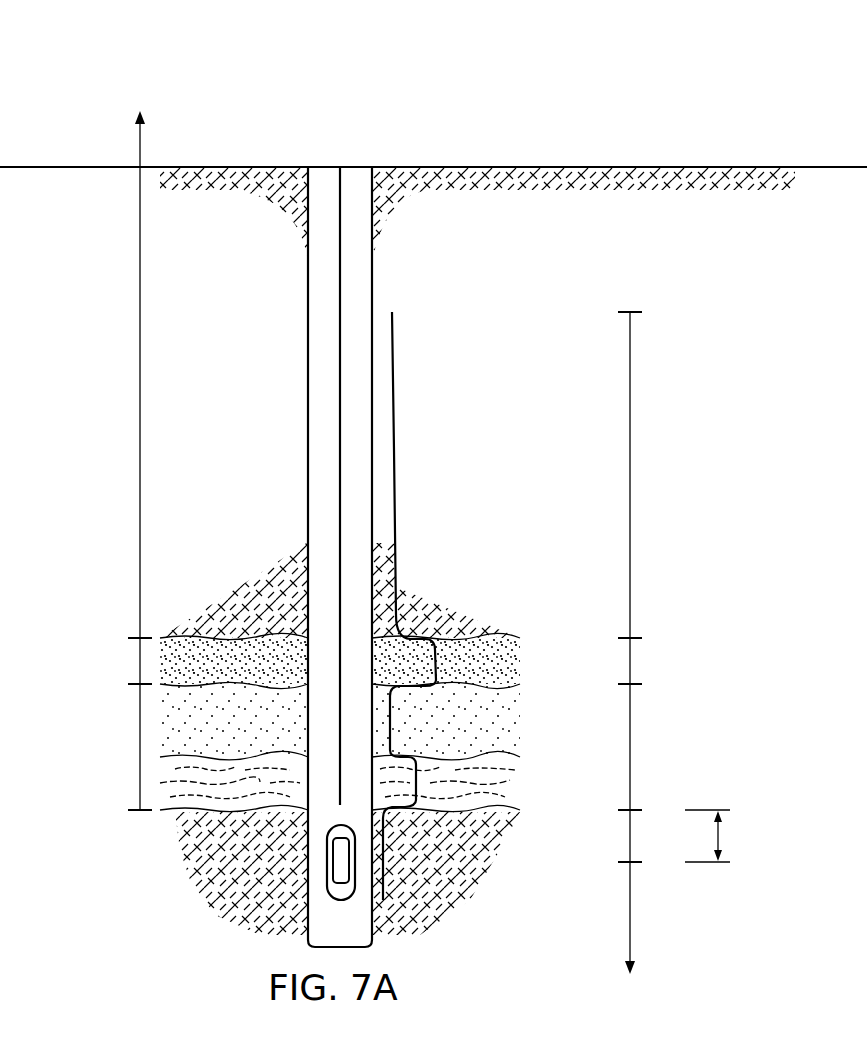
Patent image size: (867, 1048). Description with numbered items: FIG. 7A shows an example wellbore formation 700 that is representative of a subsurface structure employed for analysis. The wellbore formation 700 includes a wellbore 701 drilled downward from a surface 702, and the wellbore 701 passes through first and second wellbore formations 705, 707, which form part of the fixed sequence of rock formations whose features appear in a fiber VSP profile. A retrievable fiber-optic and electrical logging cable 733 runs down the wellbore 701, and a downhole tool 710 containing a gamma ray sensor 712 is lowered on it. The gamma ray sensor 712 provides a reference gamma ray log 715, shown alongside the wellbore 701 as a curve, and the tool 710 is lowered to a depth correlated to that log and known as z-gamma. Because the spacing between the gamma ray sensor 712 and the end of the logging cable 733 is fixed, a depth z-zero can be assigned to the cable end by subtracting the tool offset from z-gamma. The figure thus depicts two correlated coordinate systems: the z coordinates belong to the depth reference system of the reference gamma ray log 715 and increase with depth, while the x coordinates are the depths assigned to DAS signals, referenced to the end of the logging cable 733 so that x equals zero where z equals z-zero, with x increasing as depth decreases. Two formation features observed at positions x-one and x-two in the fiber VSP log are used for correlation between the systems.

The wellbore formation 700 is at (66, 68).
The wellbore 701 is at (308, 292).
The surface 702 is at (470, 167).
The first wellbore formation 705 is at (600, 800).
The second wellbore formation 707 is at (528, 667).
The downhole tool 710 is at (327, 832).
The gamma ray sensor 712 is at (333, 868).
The reference gamma ray log 715 is at (396, 445).
The retrievable fiber-optic and electrical logging cable 733 is at (342, 302).